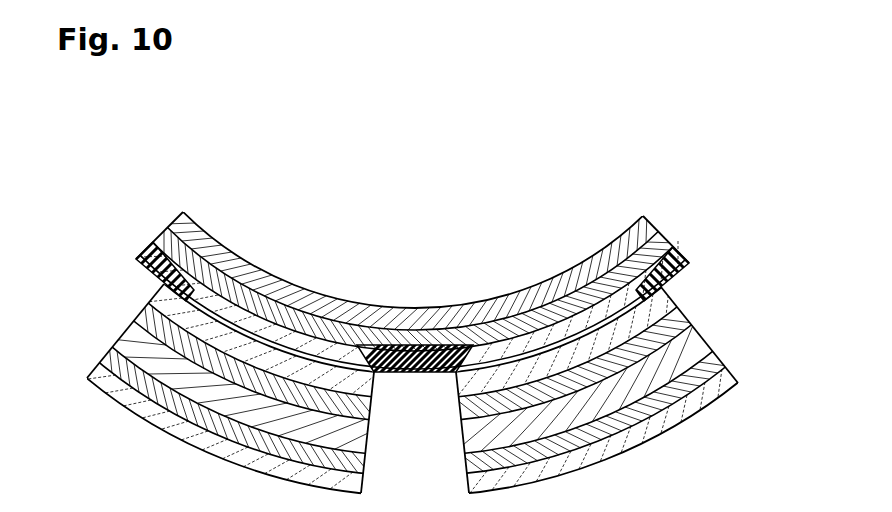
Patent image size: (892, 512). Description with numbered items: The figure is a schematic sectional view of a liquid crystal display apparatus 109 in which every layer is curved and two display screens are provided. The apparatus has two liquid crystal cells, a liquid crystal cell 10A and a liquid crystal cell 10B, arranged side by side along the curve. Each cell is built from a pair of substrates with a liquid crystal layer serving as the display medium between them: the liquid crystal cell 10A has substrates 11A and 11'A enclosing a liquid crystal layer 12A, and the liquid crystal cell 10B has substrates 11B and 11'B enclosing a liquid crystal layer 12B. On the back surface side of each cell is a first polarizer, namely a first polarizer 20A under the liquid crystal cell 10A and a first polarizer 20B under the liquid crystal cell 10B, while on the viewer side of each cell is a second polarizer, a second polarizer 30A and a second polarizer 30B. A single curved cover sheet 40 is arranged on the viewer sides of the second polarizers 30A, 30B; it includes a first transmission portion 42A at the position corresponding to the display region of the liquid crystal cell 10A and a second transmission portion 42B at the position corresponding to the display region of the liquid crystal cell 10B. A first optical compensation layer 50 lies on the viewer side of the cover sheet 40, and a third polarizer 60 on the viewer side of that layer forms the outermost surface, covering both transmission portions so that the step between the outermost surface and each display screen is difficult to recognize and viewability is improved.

The liquid crystal display apparatus 109 is at (544, 126).
The third polarizer 60 is at (655, 220).
The first optical compensation layer 50 is at (673, 240).
The cover sheet 40 is at (415, 190).
The first transmission portion 42A is at (267, 327).
The second transmission portion 42B is at (558, 332).
The second polarizer 30A is at (157, 292).
The second polarizer 30B is at (677, 295).
The liquid crystal cell 10A is at (446, 246).
The liquid crystal cell 10B is at (446, 246).
The substrate 11A is at (147, 305).
The substrate 11B is at (680, 313).
The liquid crystal layer 12A is at (140, 322).
The liquid crystal layer 12B is at (697, 335).
The substrate 11'A is at (446, 238).
The substrate 11'B is at (446, 238).
The first polarizer 20A is at (102, 374).
The first polarizer 20B is at (727, 370).